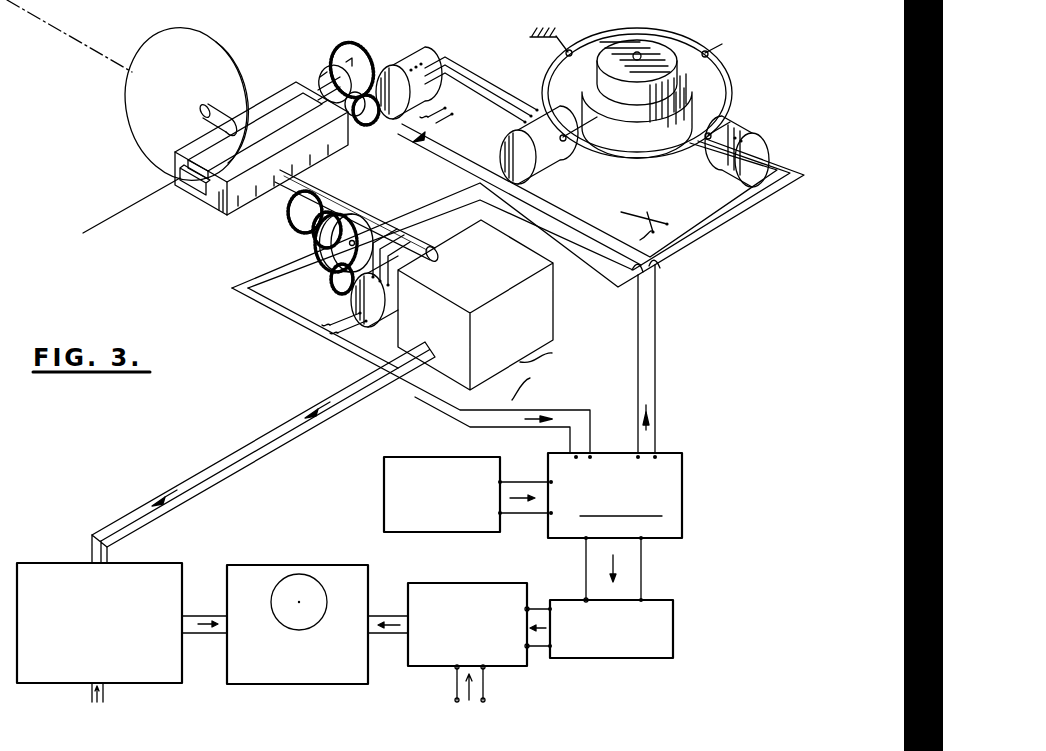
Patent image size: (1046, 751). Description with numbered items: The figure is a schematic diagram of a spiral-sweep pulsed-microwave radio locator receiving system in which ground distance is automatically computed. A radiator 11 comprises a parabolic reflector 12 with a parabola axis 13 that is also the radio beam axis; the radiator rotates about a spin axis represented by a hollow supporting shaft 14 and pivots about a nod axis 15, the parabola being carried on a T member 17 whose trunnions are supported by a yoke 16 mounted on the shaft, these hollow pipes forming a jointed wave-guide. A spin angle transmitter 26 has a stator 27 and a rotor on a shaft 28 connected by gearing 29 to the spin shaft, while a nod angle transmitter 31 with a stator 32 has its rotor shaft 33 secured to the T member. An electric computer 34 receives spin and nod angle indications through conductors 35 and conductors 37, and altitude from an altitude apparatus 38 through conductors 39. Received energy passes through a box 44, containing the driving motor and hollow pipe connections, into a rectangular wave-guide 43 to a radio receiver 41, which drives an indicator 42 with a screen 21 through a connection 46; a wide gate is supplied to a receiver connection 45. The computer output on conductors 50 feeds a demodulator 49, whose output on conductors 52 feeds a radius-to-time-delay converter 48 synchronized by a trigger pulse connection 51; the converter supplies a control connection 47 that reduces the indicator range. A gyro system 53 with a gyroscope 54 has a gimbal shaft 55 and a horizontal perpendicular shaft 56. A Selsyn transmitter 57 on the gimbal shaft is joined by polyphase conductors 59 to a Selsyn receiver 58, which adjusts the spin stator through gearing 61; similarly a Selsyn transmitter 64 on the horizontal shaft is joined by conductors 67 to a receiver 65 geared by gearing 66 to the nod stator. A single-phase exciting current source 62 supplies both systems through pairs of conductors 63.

The radiator 11 is at (181, 30).
The parabolic reflector 12 is at (233, 47).
The parabola axis 13 is at (67, 32).
The supporting shaft 14 is at (363, 192).
The nod axis 15 is at (133, 208).
The yoke 16 is at (233, 215).
The T member 17 is at (270, 113).
The screen 21 is at (298, 582).
The transmitter 26 is at (328, 254).
The stator 27 is at (310, 240).
The shaft 28 is at (297, 228).
The gearing 29 is at (303, 197).
The transmitter 31 is at (330, 67).
The stator 32 is at (338, 55).
The shaft 33 is at (313, 80).
The electric computer 34 is at (681, 527).
The pair of electrical conductors 35 is at (586, 430).
The pair of electrical conductors 37 is at (650, 377).
The altitude indicating apparatus 38 is at (383, 495).
The pair of conductors 39 is at (513, 487).
The radio receiver 41 is at (152, 684).
The indicator 42 is at (295, 685).
The hollow pipe wave-guide 43 is at (230, 458).
The box 44 is at (543, 300).
The receiver connection 45 is at (90, 694).
The connection 46 is at (199, 613).
The control connection 47 is at (386, 614).
The radius-to-time-delay converter 48 is at (497, 668).
The demodulator 49 is at (618, 660).
The pair of conductors 50 is at (633, 580).
The trigger pulse connection 51 is at (455, 678).
The pair of conductors 52 is at (537, 645).
The gyro system 53 is at (640, 182).
The gyroscope 54 is at (704, 122).
The gimbal shaft 55 is at (560, 33).
The perpendicular shaft 56 is at (700, 67).
The Selsyn transmitter 57 is at (750, 133).
The Selsyn receiver 58 is at (393, 330).
The polyphase conductors 59 is at (687, 242).
The gearing 61 is at (335, 282).
The source of single-phase exciting current 62 is at (640, 240).
The pairs of conductors 63 is at (325, 322).
The Selsyn transmitter 64 is at (547, 187).
The receiver 65 is at (384, 70).
The gearing 66 is at (360, 120).
The conductors 67 is at (496, 92).